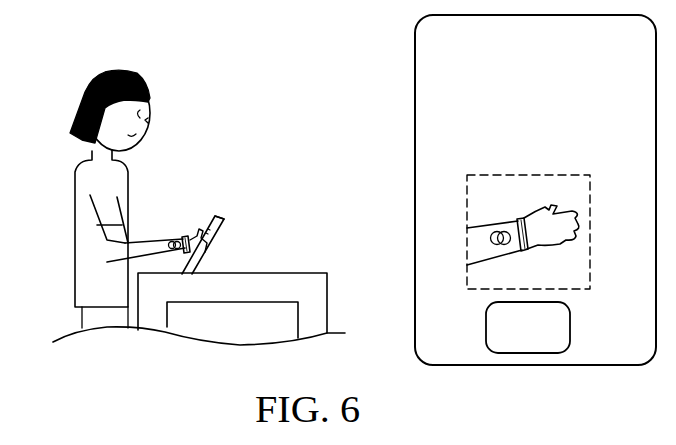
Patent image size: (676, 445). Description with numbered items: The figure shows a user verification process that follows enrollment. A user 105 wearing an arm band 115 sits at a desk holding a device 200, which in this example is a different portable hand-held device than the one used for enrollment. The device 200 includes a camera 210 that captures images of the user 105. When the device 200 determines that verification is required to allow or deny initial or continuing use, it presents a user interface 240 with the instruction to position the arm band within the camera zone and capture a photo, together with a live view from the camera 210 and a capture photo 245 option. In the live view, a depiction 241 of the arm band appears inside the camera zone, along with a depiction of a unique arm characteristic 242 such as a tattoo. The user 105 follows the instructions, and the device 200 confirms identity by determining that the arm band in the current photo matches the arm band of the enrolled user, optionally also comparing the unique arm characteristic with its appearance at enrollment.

The user 105 is at (88, 90).
The arm band 115 is at (183, 237).
The device 200 is at (219, 226).
The camera 210 is at (214, 216).
The user interface 240 is at (416, 33).
The depiction of the arm band 241 is at (545, 207).
The depiction of a unique arm characteristic 242 is at (495, 244).
The capture photo user interface option 245 is at (486, 328).